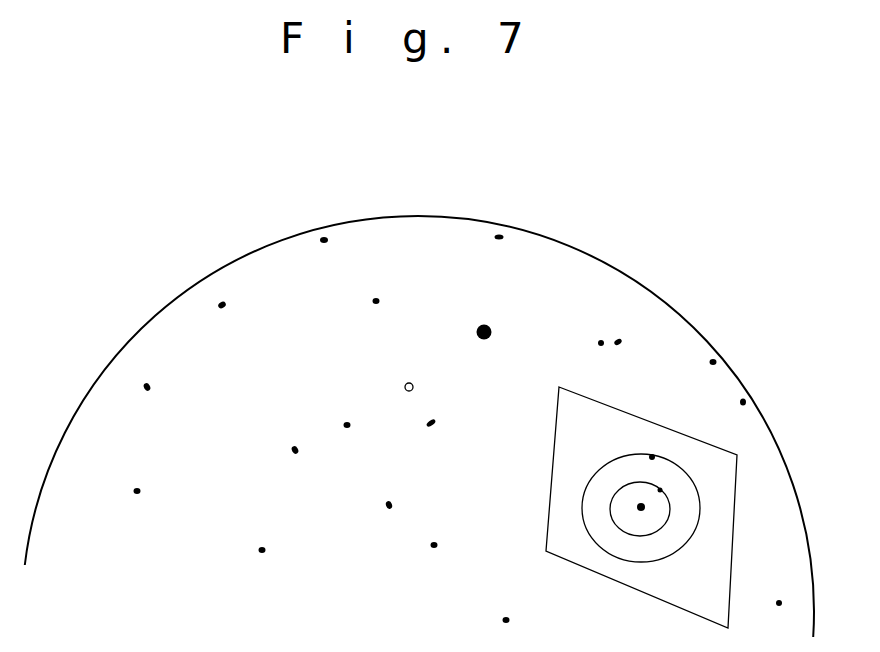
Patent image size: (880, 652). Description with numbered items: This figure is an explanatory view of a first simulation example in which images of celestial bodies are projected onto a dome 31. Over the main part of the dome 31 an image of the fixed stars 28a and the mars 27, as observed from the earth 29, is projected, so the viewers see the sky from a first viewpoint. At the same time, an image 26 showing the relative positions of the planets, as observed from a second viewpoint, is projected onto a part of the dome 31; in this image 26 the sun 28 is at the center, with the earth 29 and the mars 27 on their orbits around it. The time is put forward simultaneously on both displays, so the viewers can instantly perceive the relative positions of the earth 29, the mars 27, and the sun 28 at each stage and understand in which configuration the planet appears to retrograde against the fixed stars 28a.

The image 26 is at (717, 467).
The mars 27 is at (486, 322).
The sun 28 is at (641, 507).
The fixed star 28a is at (377, 300).
The earth 29 is at (660, 490).
The dome 31 is at (663, 297).